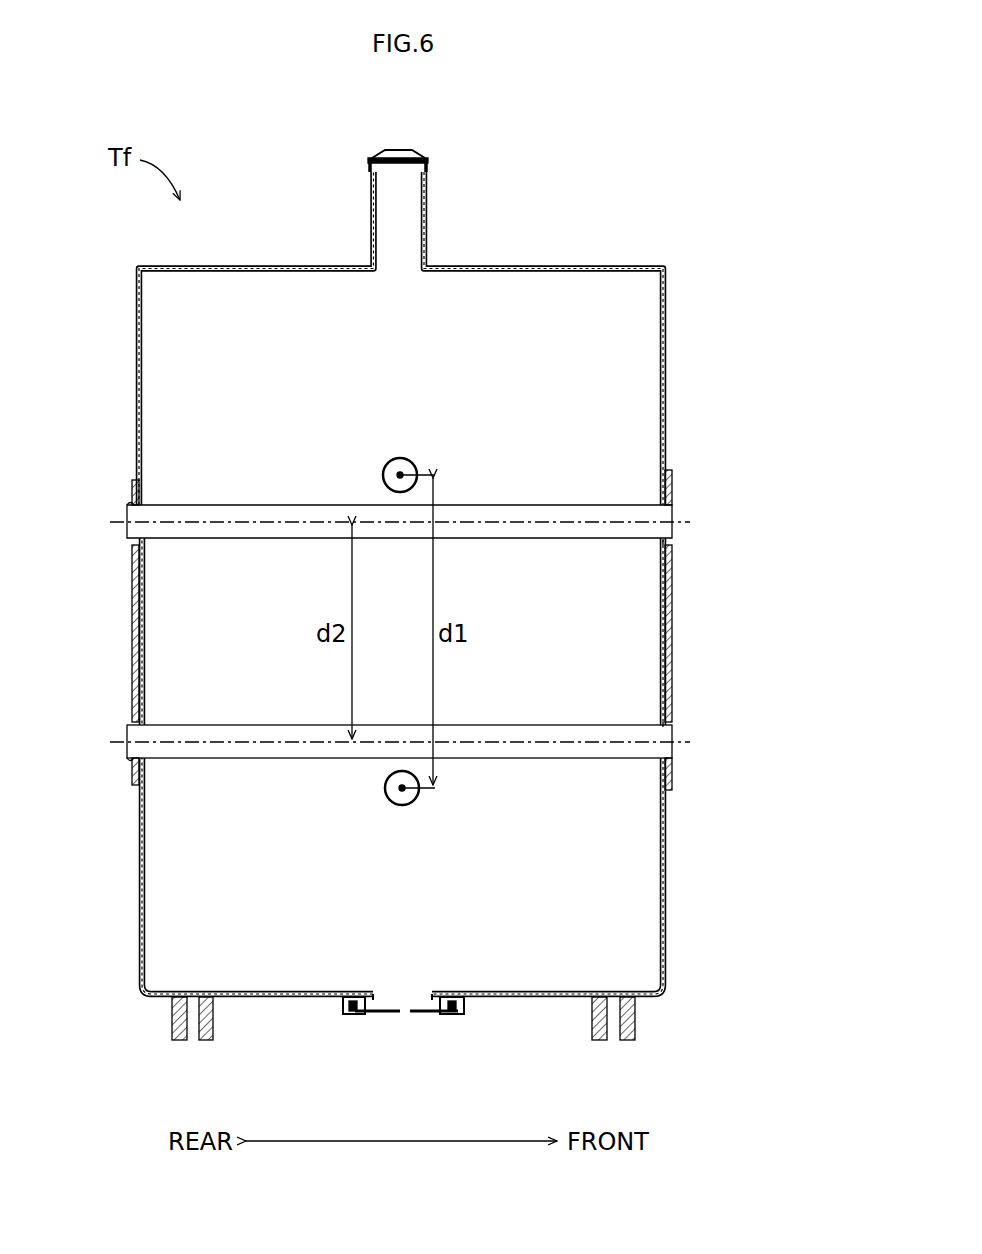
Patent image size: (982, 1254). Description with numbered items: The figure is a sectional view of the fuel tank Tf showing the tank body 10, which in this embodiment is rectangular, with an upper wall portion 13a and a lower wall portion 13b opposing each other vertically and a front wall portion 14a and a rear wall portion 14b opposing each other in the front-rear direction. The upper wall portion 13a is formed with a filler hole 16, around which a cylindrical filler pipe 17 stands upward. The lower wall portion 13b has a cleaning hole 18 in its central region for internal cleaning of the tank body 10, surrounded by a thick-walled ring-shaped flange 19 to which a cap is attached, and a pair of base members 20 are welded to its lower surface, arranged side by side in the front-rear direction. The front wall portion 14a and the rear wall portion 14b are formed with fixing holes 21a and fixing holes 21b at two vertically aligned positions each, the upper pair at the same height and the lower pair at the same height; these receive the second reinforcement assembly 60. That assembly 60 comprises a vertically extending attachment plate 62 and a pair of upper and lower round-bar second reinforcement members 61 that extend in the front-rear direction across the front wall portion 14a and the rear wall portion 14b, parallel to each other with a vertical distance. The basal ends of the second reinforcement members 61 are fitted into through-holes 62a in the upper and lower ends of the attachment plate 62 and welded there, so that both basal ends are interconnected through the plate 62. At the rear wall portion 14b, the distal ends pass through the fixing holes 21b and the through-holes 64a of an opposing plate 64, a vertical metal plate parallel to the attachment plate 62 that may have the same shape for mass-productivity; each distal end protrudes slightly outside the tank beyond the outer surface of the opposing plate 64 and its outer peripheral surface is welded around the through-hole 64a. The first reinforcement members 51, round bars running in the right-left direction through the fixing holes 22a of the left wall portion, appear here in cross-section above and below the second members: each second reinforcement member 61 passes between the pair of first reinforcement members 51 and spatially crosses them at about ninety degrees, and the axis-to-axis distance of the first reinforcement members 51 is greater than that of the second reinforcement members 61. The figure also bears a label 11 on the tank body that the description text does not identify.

The tank body 10 is at (655, 245).
The tank body 11 is at (668, 908).
The upper wall portion 13a is at (568, 266).
The lower wall portion 13b is at (560, 998).
The front wall portion 14a is at (667, 315).
The rear wall portion 14b is at (136, 315).
The filler hole 16 is at (414, 262).
The filler pipe 17 is at (428, 195).
The cleaning hole 18 is at (378, 992).
The flange 19 is at (465, 1011).
The base members 20 is at (636, 1025).
The fixing holes 21a is at (656, 507).
The fixing holes 21b is at (142, 507).
The fixing holes 22a is at (412, 466).
The first reinforcement members 51 is at (400, 475).
The second reinforcement assembly 60 is at (725, 630).
The second reinforcement members 61 is at (660, 532).
The attachment plate 62 is at (672, 620).
The through-holes 62a is at (672, 510).
The opposing plate 64 is at (132, 612).
The through-holes 64a is at (128, 507).